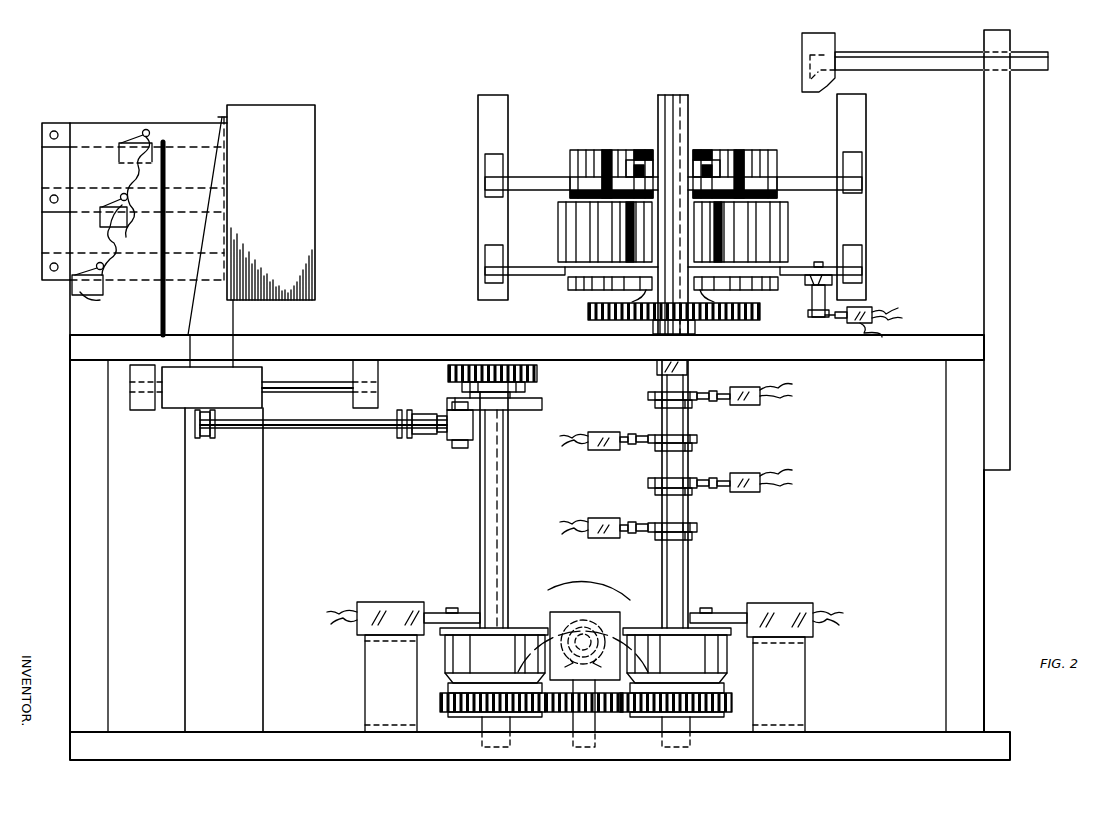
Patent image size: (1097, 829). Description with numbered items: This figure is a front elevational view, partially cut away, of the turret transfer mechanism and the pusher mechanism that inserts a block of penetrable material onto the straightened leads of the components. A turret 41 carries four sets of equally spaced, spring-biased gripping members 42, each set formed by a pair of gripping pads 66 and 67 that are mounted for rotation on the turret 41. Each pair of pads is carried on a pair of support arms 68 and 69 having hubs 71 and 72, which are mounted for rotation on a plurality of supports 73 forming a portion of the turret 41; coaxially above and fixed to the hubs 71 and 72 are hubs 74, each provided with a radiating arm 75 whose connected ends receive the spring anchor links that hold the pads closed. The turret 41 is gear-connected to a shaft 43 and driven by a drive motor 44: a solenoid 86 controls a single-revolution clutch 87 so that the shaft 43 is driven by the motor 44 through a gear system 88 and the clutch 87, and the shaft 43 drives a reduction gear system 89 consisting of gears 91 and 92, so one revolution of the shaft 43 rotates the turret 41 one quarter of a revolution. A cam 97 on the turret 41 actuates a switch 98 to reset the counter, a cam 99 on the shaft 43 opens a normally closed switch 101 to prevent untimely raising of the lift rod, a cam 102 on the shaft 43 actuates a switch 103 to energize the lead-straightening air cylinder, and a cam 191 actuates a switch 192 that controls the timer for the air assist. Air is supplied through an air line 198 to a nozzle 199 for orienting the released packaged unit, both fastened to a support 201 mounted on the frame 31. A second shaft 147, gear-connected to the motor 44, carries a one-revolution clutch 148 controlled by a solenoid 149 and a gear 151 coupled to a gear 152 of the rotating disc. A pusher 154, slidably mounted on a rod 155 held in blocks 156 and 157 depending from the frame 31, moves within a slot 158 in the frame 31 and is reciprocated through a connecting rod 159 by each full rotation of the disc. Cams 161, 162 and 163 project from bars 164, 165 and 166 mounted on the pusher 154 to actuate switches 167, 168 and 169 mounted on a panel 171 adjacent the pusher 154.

The frame 31 is at (385, 340).
The turret 41 is at (621, 140).
The gripping members 42 is at (512, 119).
The shaft 43 is at (688, 568).
The drive motor 44 is at (582, 575).
The gripping pad 66 is at (658, 100).
The gripping pad 67 is at (478, 104).
The support arm 68 is at (514, 182).
The support arm 69 is at (550, 267).
The hub 71 is at (568, 195).
The hub 72 is at (582, 290).
The supports 73 is at (795, 222).
The hubs 74 is at (570, 160).
The radiating arm 75 is at (650, 148).
The solenoid 86 is at (776, 598).
The single-revolution clutch 87 is at (725, 674).
The gear system 88 is at (617, 727).
The reduction gear system 89 is at (582, 317).
The gear 91 is at (694, 329).
The gear 92 is at (724, 318).
The cam 97 is at (812, 297).
The switch 98 is at (868, 308).
The cam 99 is at (648, 482).
The switch 101 is at (755, 489).
The cam 102 is at (690, 393).
The switch 103 is at (753, 407).
The shaft 147 is at (480, 498).
The one-revolution clutch 148 is at (470, 628).
The solenoid 149 is at (390, 603).
The gear 151 is at (537, 372).
The gear 152 is at (448, 372).
The pusher 154 is at (313, 127).
The rod 155 is at (328, 393).
The block 156 is at (146, 411).
The block 157 is at (378, 401).
The slot 158 is at (311, 338).
The connecting rod 159 is at (349, 429).
The cam 161 is at (44, 265).
The cam 162 is at (44, 205).
The cam 163 is at (44, 140).
The bar 164 is at (188, 281).
The bar 165 is at (196, 214).
The bar 166 is at (179, 136).
The switch 167 is at (84, 300).
The switch 168 is at (100, 231).
The switch 169 is at (119, 160).
The panel 171 is at (152, 172).
The cam 191 is at (698, 439).
The switch 192 is at (614, 430).
The air line 198 is at (864, 53).
The nozzle 199 is at (802, 60).
The support 201 is at (1010, 180).